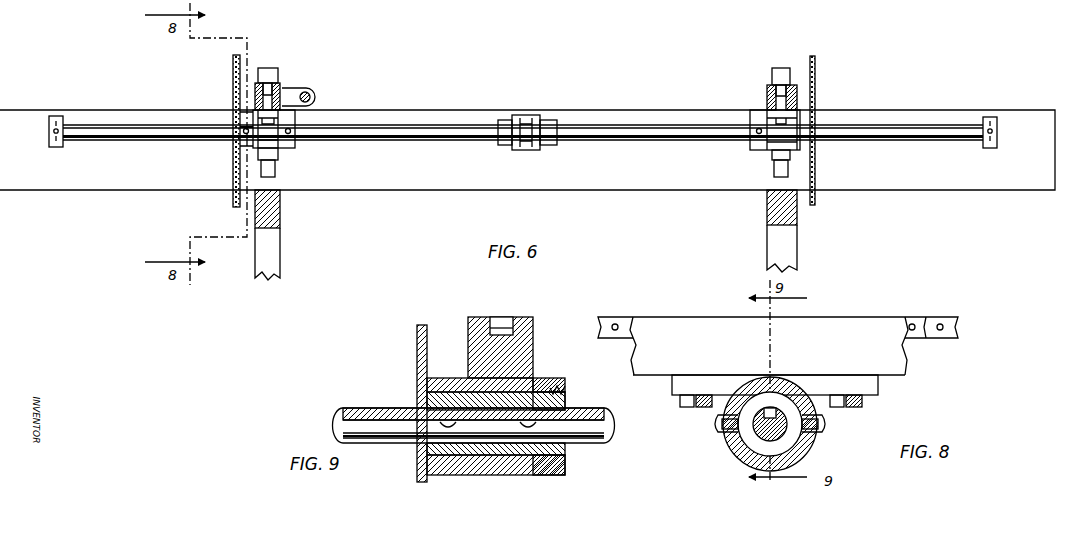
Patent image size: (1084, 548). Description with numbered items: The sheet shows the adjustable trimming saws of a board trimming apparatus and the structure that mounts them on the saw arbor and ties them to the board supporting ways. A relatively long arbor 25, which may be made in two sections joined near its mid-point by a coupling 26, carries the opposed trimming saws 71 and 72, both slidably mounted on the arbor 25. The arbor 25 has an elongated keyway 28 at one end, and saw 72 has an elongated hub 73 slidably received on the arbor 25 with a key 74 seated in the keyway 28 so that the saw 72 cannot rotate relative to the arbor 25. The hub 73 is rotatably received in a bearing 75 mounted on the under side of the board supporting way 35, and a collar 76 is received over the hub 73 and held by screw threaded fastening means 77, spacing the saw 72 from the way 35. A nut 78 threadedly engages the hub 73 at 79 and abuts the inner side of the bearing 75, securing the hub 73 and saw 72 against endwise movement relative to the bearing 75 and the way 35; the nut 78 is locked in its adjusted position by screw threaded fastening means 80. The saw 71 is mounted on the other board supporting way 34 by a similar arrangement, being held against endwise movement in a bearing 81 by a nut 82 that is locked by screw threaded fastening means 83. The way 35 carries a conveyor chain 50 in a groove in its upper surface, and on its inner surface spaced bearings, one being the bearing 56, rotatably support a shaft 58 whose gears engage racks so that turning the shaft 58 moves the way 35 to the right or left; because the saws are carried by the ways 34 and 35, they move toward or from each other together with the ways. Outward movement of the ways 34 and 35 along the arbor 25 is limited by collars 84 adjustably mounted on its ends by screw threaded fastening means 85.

In FIG. 6, the arbor 25 is at (621, 143).
In FIG. 9, the arbor 25 is at (600, 443).
In FIG. 6, the coupling 26 is at (548, 150).
In FIG. 9, the keyway 28 is at (358, 409).
In FIG. 6, the board supporting way 34 is at (768, 102).
In FIG. 6, the board supporting way 35 is at (280, 88).
In FIG. 9, the board supporting way 35 is at (534, 350).
In FIG. 8, the board supporting way 35 is at (905, 358).
In FIG. 8, the conveyor chain 50 is at (952, 330).
In FIG. 6, the bearing 56 is at (311, 95).
In FIG. 6, the shaft 58 is at (310, 99).
In FIG. 6, the trimming saw 71 is at (815, 92).
In FIG. 6, the trimming saw 72 is at (233, 180).
In FIG. 9, the trimming saw 72 is at (417, 340).
In FIG. 9, the hub 73 is at (567, 400).
In FIG. 9, the key 74 is at (420, 410).
In FIG. 8, the key 74 is at (770, 414).
In FIG. 6, the bearing 75 is at (281, 150).
In FIG. 9, the bearing 75 is at (555, 476).
In FIG. 8, the bearing 75 is at (878, 385).
In FIG. 6, the collar 76 is at (240, 114).
In FIG. 9, the collar 76 is at (440, 380).
In FIG. 8, the collar 76 is at (738, 457).
In FIG. 6, the screw threaded fastening means 77 is at (243, 140).
In FIG. 8, the screw threaded fastening means 77 is at (720, 432).
In FIG. 9, the nut 78 is at (552, 380).
In FIG. 9, the threaded engagement 79 is at (566, 390).
In FIG. 6, the screw threaded fastening means 80 is at (293, 140).
In FIG. 6, the bearing 81 is at (771, 160).
In FIG. 6, the nut 82 is at (750, 147).
In FIG. 6, the screw threaded fastening means 83 is at (757, 128).
In FIG. 6, the collar 84 is at (993, 121).
In FIG. 6, the screw threaded fastening means 85 is at (993, 133).